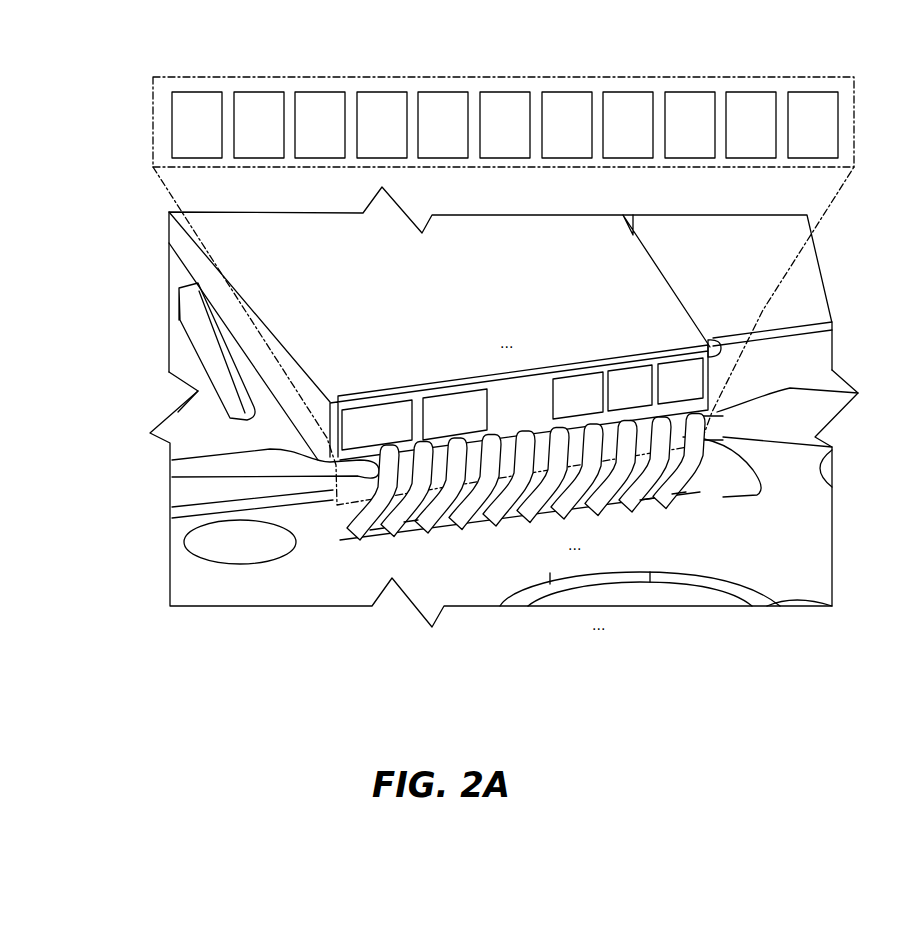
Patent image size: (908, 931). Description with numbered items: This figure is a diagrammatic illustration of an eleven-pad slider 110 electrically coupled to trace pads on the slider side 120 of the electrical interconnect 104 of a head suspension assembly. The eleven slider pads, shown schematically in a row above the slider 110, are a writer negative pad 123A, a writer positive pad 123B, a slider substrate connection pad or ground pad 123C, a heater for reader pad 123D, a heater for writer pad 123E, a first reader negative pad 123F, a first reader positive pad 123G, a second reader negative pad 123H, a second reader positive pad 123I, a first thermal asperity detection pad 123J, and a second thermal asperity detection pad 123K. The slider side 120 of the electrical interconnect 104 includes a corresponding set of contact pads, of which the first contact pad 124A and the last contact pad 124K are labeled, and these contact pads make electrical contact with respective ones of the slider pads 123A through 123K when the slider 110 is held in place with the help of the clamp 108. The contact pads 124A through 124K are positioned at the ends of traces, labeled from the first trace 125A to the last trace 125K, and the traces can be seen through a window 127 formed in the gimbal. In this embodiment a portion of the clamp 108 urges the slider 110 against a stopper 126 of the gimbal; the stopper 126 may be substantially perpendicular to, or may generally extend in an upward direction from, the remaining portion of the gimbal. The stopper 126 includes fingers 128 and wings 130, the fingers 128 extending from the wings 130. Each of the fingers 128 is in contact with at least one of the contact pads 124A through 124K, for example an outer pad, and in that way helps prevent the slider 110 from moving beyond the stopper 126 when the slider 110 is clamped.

The electrical interconnect 104 is at (598, 501).
The clamp 108 is at (224, 347).
The slider 110 is at (487, 289).
The slider side of electrical interconnect 120 is at (487, 645).
The writer negative pad (W−) 123A is at (200, 100).
The writer positive pad (W+) 123B is at (262, 100).
The slider substrate connection pad or ground pad (G) 123C is at (323, 100).
The heater for reader pad (Hr) 123D is at (385, 100).
The heater for writer pad (Hw) 123E is at (446, 100).
The first reader negative pad (R1−) 123F is at (508, 100).
The first reader positive pad (R1+) 123G is at (570, 100).
The second reader negative pad (R2−) 123H is at (631, 100).
The second reader positive pad (R2+) 123I is at (693, 100).
The first thermal asperity detection pad (Tax) 123J is at (754, 100).
The second thermal asperity detection pad (Tay) 123K is at (816, 100).
The contact pad 124A is at (377, 490).
The contact pad 124K is at (693, 443).
The trace 125A is at (369, 531).
The trace 125K is at (718, 482).
The stopper 126 is at (164, 500).
The window 127 is at (721, 442).
The fingers 128 is at (358, 473).
The wings 130 is at (215, 504).